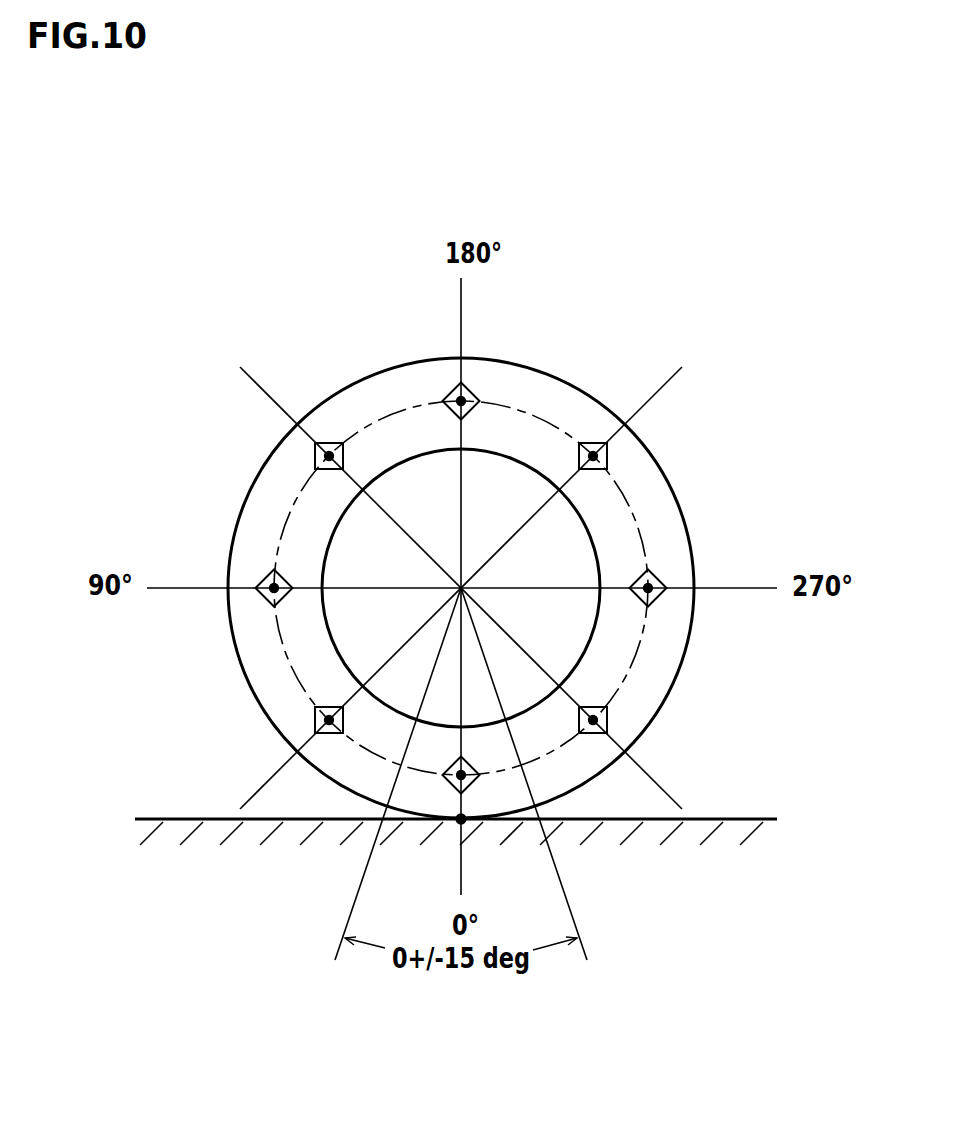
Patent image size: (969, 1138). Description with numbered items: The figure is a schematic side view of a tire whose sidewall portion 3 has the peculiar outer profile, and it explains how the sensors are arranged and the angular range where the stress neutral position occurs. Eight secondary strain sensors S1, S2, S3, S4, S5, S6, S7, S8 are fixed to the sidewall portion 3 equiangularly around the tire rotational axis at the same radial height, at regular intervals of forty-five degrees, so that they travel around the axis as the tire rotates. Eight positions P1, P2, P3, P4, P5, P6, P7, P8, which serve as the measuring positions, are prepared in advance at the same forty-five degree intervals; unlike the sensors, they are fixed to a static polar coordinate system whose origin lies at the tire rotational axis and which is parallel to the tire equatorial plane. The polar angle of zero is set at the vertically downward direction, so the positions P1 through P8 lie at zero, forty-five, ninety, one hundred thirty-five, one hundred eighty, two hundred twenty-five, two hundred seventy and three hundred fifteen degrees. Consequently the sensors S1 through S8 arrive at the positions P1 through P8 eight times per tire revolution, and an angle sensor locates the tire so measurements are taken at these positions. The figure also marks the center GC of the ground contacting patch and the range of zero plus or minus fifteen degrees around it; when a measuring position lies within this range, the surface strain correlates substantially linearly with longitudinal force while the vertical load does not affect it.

The tire sidewall portion 3 is at (558, 402).
The center of the ground contacting patch GC is at (453, 827).
The sensor S1 is at (443, 783).
The sensor S2 is at (313, 718).
The sensor S3 is at (269, 572).
The sensor S4 is at (337, 440).
The sensor S5 is at (480, 392).
The sensor S6 is at (608, 457).
The sensor S7 is at (652, 605).
The sensor S8 is at (590, 737).
The position P1 is at (480, 783).
The position P2 is at (333, 733).
The position P3 is at (272, 605).
The position P4 is at (315, 458).
The position P5 is at (447, 397).
The position P6 is at (592, 445).
The position P7 is at (650, 572).
The position P8 is at (607, 710).